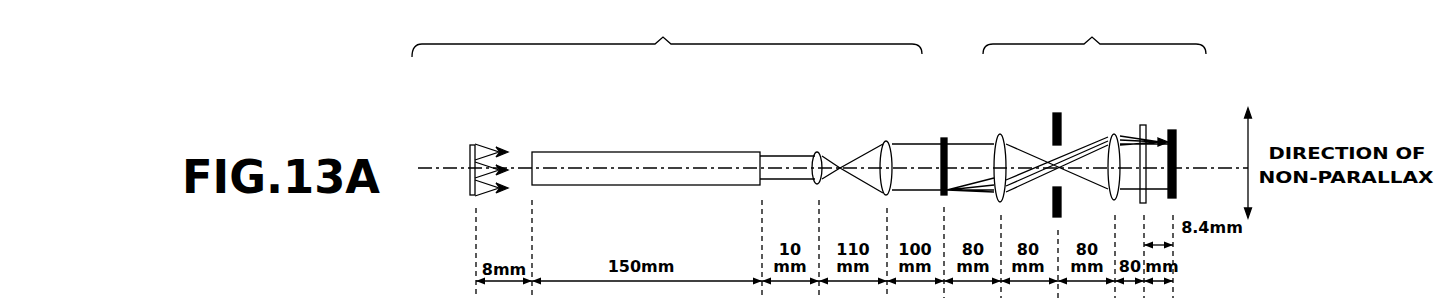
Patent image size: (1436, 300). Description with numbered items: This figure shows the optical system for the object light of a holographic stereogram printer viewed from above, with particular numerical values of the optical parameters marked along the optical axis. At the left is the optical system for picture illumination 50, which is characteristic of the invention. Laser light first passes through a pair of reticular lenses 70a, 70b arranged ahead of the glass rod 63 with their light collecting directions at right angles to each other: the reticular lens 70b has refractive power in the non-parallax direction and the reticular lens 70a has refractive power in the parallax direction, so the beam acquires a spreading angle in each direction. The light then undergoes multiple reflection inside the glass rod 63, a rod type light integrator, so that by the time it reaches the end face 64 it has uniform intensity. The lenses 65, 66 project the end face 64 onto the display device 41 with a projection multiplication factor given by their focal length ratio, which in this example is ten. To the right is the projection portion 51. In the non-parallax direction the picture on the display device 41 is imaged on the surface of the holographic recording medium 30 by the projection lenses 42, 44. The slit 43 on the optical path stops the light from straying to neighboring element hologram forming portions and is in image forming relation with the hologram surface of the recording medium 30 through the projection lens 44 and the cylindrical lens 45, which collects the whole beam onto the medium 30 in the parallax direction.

The holographic recording medium 30 is at (1172, 130).
The display device 41 is at (944, 138).
The projection lens 42 is at (1001, 134).
The slit 43 is at (1057, 113).
The projection lens 44 is at (1114, 134).
The cylindrical lens 45 is at (1143, 125).
The optical system for picture illumination 50 is at (667, 31).
The projection optical unit 51 is at (1094, 30).
The glass rod 63 is at (660, 152).
The end face 64 is at (768, 156).
The lens 65 is at (818, 152).
The lens 66 is at (887, 141).
The reticular lens 70a is at (472, 146).
The reticular lens 70b is at (480, 147).